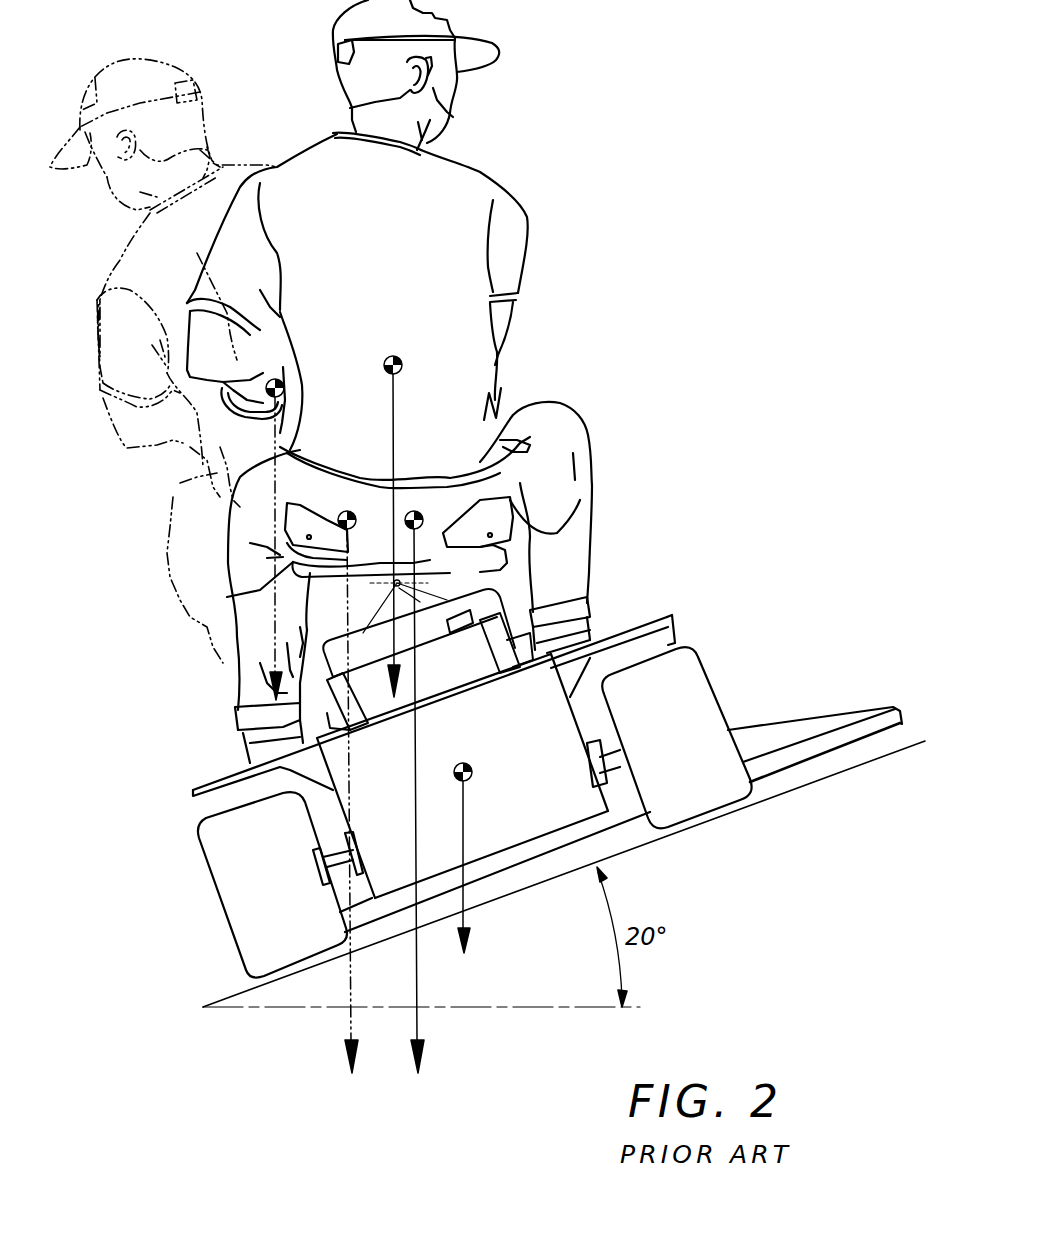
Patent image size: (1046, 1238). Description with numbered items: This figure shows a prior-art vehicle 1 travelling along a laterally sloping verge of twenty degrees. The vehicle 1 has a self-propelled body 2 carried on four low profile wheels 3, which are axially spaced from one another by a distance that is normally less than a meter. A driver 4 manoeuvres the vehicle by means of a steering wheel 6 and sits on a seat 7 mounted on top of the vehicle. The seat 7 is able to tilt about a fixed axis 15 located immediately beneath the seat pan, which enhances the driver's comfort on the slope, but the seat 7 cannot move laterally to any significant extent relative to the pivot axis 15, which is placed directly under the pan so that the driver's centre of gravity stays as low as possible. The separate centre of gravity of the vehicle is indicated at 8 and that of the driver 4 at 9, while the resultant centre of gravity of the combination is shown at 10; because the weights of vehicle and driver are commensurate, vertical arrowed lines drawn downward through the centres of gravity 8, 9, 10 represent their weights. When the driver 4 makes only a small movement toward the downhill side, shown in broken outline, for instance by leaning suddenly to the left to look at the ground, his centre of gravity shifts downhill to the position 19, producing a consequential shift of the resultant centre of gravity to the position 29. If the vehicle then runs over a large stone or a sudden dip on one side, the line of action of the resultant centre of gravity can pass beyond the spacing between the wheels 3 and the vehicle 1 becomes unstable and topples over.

The vehicle 1 is at (733, 585).
The self-propelled body 2 is at (560, 737).
The low profile wheels 3 is at (703, 710).
The driver 4 is at (473, 197).
The steering wheel 6 is at (268, 400).
The seat 7 is at (450, 573).
The centre-of-gravity of the vehicle 8 is at (473, 777).
The centre-of-gravity of the driver 9 is at (398, 363).
The resultant centre-of-gravity 10 is at (423, 517).
The fixed axis 15 is at (365, 625).
The shifted position of the driver's centre of gravity 19 is at (283, 413).
The shifted position of the resultant centre-of-gravity 29 is at (338, 523).